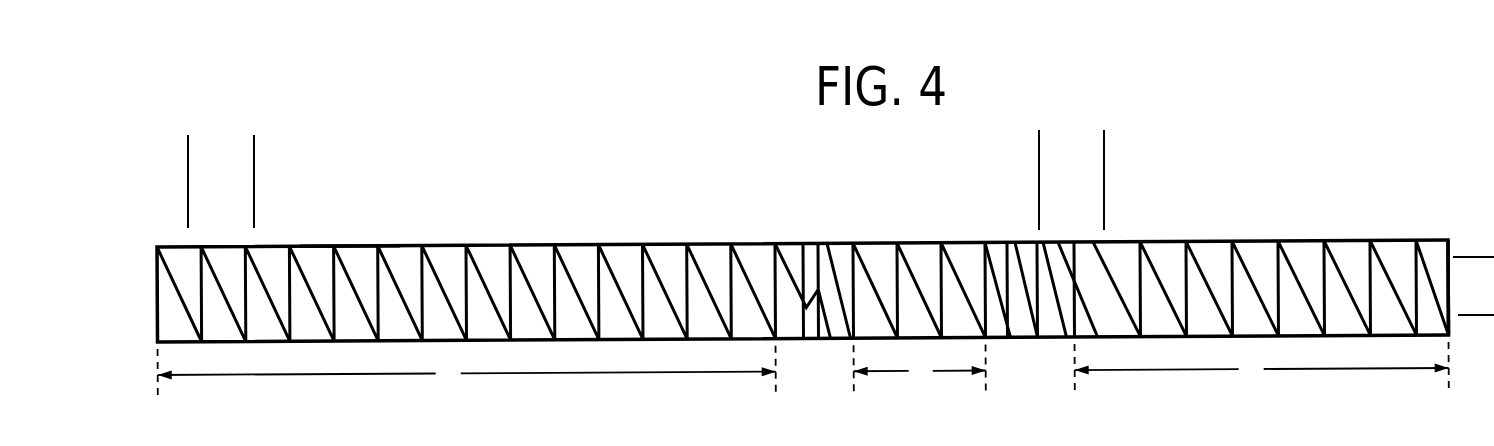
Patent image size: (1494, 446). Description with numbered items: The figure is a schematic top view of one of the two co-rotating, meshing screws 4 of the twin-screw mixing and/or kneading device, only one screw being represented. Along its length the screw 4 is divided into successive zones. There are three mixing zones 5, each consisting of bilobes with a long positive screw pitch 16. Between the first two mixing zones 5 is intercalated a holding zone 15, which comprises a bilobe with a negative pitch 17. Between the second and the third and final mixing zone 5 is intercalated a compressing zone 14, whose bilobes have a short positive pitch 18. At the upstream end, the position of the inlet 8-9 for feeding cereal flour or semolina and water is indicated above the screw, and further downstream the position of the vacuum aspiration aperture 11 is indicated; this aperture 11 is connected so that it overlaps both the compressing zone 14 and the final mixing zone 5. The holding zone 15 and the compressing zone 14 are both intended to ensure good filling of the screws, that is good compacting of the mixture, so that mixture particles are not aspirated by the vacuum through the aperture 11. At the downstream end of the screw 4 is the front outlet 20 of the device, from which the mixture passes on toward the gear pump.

The screw 4 is at (638, 198).
The mixing zone 5 is at (803, 370).
The inlet 8-9 is at (218, 143).
The vacuum aspiration aperture 11 is at (1067, 137).
The compressing zone 14 is at (1030, 369).
The holding zone 15 is at (815, 369).
The long positive screw pitch 16 is at (346, 246).
The negative pitch 17 is at (811, 243).
The short positive pitch 18 is at (1014, 243).
The front outlet 20 is at (1487, 265).